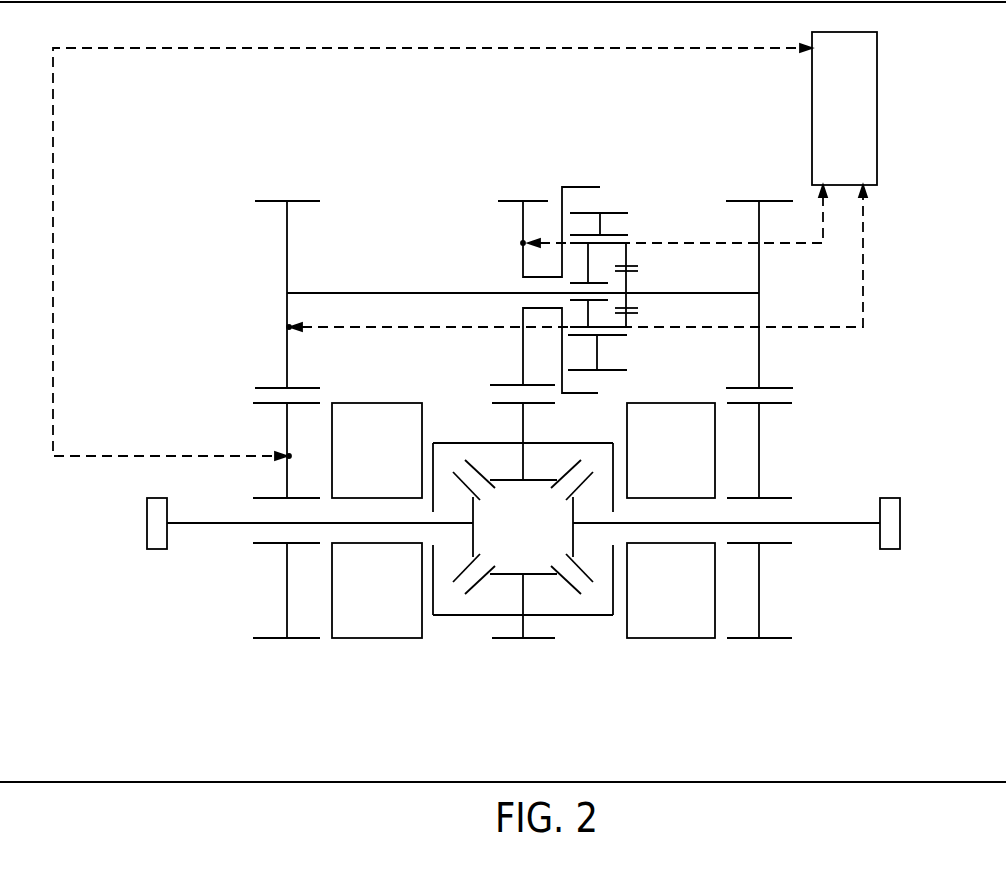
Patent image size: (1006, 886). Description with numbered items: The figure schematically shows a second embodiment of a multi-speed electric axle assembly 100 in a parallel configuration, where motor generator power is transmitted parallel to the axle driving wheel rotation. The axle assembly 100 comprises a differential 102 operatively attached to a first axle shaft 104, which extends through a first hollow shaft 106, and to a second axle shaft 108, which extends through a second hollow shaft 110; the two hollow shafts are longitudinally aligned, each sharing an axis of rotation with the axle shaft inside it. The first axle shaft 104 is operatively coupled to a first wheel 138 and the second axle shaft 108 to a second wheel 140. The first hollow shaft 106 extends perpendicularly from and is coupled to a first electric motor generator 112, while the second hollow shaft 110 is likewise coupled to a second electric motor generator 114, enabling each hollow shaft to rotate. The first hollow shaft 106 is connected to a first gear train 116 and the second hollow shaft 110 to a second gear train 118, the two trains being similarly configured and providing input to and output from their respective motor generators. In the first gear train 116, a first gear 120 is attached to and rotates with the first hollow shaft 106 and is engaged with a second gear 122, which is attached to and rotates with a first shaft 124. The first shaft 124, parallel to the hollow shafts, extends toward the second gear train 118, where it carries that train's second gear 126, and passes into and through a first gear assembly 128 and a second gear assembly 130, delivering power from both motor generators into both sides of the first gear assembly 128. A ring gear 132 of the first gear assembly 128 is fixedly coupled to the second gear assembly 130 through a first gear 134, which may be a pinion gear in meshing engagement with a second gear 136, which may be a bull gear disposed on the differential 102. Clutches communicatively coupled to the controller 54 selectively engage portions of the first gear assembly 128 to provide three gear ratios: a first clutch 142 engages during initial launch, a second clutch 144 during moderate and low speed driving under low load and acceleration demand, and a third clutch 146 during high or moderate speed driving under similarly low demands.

The controller 54 is at (856, 120).
The multi-speed electric axle assembly 100 is at (905, 165).
The differential 102 is at (450, 663).
The first axle shaft 104 is at (205, 523).
The first hollow shaft 106 is at (258, 497).
The second axle shaft 108 is at (862, 525).
The second hollow shaft 110 is at (773, 497).
The first electric motor generator 112 is at (373, 640).
The second electric motor generator 114 is at (670, 640).
The first gear train 116 is at (180, 353).
The second gear train 118 is at (843, 362).
The first gear 120 is at (285, 430).
The second gear 122 is at (283, 250).
The first shaft 124 is at (375, 292).
The second gear 126 is at (762, 262).
The first gear assembly 128 is at (650, 175).
The second gear assembly 130 is at (468, 226).
The ring gear 132 is at (582, 187).
The first gear 134 is at (508, 198).
The second gear 136 is at (540, 642).
The first wheel 138 is at (147, 523).
The second wheel 140 is at (900, 523).
The first clutch 142 is at (290, 457).
The second clutch 144 is at (522, 244).
The third clutch 146 is at (283, 325).